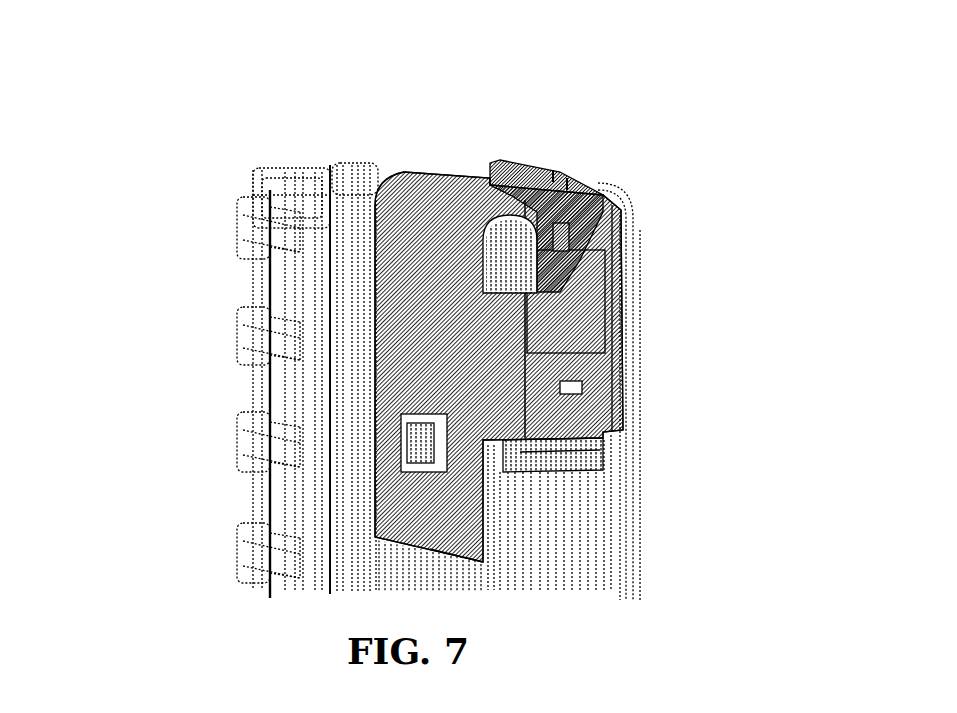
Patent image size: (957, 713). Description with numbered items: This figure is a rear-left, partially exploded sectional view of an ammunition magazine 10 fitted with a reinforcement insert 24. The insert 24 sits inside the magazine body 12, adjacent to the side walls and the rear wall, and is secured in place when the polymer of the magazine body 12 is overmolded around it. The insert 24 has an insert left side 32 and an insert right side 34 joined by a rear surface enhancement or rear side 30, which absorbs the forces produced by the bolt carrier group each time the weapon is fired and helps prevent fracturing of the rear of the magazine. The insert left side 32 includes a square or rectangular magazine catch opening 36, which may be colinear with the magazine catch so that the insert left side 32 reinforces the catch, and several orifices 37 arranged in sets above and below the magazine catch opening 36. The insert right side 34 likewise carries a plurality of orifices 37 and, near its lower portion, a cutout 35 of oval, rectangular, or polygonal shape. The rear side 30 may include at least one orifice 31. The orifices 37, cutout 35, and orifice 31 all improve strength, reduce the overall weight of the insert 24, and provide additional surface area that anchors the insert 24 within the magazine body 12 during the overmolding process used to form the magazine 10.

The ammunition magazine 10 is at (276, 122).
The magazine body 12 is at (631, 231).
The reinforcement insert 24 is at (628, 326).
The rear surface enhancement 30 is at (603, 357).
The orifice 31 is at (570, 399).
The insert left side 32 is at (477, 533).
The insert right side 34 is at (591, 191).
The cutout 35 is at (550, 454).
The magazine catch opening 36 is at (410, 436).
The orifices 37 is at (567, 187).